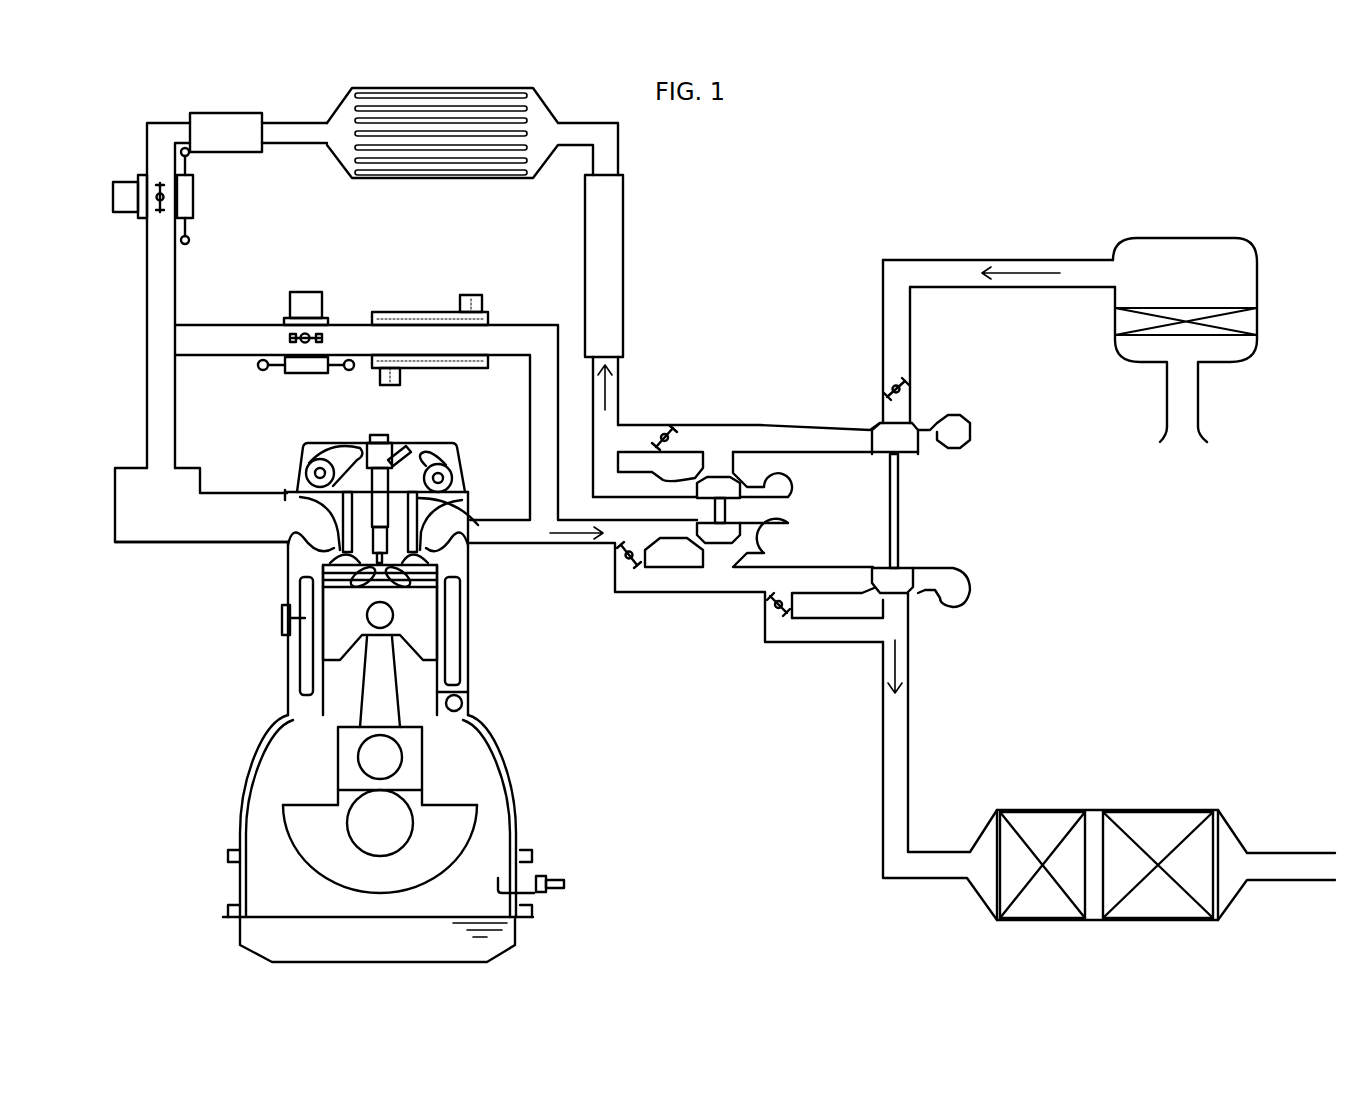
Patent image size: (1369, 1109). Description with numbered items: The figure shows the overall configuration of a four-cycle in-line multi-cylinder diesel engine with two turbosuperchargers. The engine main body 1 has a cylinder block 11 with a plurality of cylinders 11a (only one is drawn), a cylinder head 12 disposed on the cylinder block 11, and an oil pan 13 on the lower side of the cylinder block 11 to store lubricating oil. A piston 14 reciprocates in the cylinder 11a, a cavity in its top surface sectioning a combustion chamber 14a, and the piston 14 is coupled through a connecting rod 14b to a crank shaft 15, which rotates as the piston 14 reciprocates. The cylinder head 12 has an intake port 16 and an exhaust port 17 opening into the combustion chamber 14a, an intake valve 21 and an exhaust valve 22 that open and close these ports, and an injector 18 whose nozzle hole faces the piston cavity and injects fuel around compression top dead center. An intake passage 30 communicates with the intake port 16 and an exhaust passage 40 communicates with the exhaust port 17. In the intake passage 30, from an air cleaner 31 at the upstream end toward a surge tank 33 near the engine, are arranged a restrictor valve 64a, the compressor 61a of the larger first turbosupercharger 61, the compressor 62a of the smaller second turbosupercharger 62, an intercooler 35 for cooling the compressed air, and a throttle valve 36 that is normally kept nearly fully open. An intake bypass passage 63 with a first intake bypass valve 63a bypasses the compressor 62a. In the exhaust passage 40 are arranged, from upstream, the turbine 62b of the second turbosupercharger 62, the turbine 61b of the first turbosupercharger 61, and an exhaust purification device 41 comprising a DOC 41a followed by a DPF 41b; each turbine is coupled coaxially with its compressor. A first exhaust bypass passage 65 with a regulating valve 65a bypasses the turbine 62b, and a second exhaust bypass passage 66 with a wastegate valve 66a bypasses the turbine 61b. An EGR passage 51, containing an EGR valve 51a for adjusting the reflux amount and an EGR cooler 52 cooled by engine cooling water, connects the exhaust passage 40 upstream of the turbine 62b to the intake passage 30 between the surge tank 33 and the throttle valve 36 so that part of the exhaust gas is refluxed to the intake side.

The engine main body 1 is at (178, 920).
The cylinder block 11 is at (470, 653).
The cylinder 11a is at (470, 694).
The cylinder head 12 is at (465, 492).
The oil pan 13 is at (463, 962).
The piston 14 is at (333, 647).
The combustion chamber 14a is at (400, 592).
The connecting rod 14b is at (347, 740).
The crank shaft 15 is at (413, 837).
The intake port 16 is at (297, 528).
The exhaust port 17 is at (455, 545).
The injector 18 is at (395, 445).
The intake valve 21 is at (345, 590).
The exhaust valve 22 is at (425, 508).
The intake passage 30 is at (147, 383).
The air cleaner 31 is at (1205, 238).
The surge tank 33 is at (140, 532).
The intercooler 35 is at (470, 178).
The throttle valve 36 is at (160, 188).
The exhaust passage 40 is at (883, 783).
The exhaust purification device 41 is at (1166, 810).
The DOC 41a is at (1043, 818).
The DPF 41b is at (1158, 818).
The EGR passage 51 is at (528, 325).
The EGR valve 51a is at (322, 338).
The EGR cooler 52 is at (408, 312).
The first turbosupercharger 61 is at (994, 511).
The compressor 61a is at (907, 440).
The turbine 61b is at (912, 578).
The second turbosupercharger 62 is at (733, 594).
The compressor 62a is at (707, 490).
The turbine 62b is at (720, 533).
The intake bypass passage 63 is at (737, 422).
The first intake bypass valve 63a is at (668, 428).
The restrictor valve 64a is at (905, 392).
The first exhaust bypass passage 65 is at (633, 595).
The regulating valve 65a is at (630, 563).
The second exhaust bypass passage 66 is at (843, 648).
The wastegate valve 66a is at (785, 617).